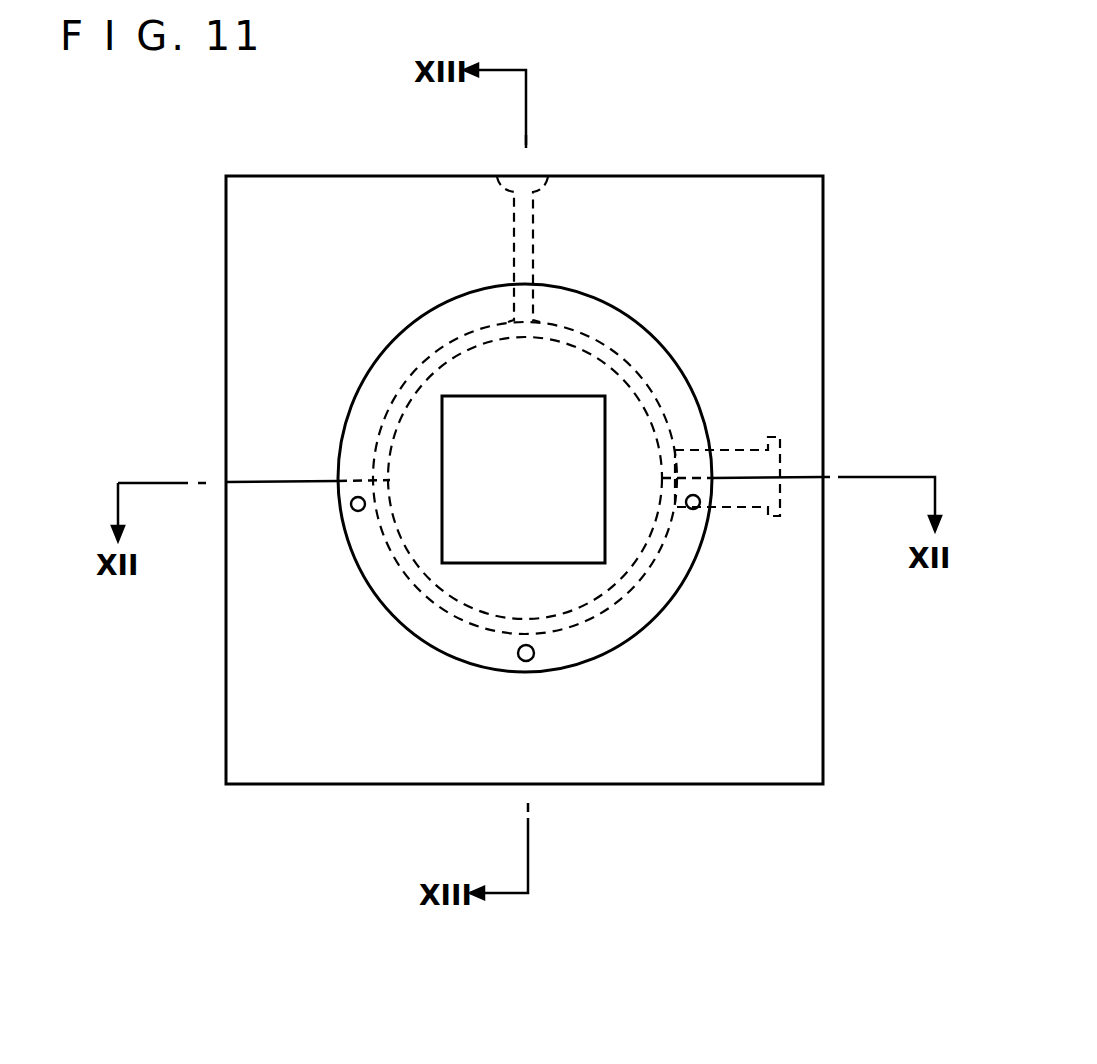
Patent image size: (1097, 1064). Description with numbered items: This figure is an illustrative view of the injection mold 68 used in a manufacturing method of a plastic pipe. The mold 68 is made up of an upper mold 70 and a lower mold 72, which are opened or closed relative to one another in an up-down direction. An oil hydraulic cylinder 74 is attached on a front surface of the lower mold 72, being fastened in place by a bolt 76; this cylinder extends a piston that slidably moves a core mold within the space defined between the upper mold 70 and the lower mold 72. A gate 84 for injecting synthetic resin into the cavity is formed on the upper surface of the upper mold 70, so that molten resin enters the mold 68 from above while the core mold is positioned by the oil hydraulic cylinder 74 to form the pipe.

The injection mold 68 is at (716, 126).
The upper mold 70 is at (806, 366).
The lower mold 72 is at (806, 672).
The oil hydraulic cylinder 74 is at (462, 423).
The bolt 76 is at (353, 512).
The gate 84 is at (528, 178).